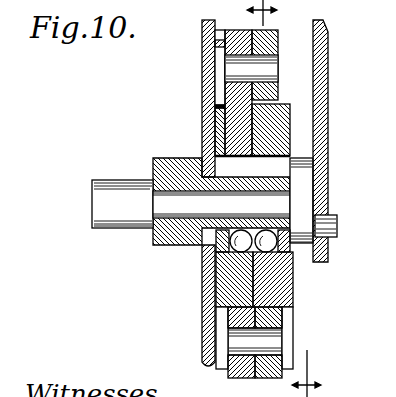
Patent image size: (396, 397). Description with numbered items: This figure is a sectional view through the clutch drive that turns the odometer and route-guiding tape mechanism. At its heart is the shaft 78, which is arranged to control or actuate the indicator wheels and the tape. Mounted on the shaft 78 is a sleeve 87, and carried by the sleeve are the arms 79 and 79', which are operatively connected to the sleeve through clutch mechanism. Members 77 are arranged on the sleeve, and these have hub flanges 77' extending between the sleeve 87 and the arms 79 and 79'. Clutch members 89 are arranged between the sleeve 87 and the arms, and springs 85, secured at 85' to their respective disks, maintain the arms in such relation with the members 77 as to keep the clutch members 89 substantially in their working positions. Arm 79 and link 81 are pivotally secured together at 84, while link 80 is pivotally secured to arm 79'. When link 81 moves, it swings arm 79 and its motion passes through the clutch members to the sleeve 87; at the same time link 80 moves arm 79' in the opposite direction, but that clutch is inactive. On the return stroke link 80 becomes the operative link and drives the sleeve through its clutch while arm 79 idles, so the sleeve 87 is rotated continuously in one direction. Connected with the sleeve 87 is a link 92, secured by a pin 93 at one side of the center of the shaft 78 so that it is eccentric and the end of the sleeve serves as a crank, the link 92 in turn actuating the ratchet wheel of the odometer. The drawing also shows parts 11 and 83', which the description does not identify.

The supporting plate 11 is at (205, 335).
The members 77 is at (246, 279).
The hub flanges 77' is at (225, 144).
The shaft 78 is at (273, 201).
The arm 79 is at (280, 119).
The arm 79' is at (196, 132).
The link 80 is at (277, 32).
The link 81 is at (230, 375).
The friction wheel body 83' is at (201, 93).
The pivotal connection 84 is at (267, 67).
The springs 85 is at (276, 338).
The spring securing point 85' is at (190, 69).
The sleeve 87 is at (228, 221).
The clutch members 89 is at (276, 250).
The link 92 is at (325, 82).
The pin 93 is at (338, 230).